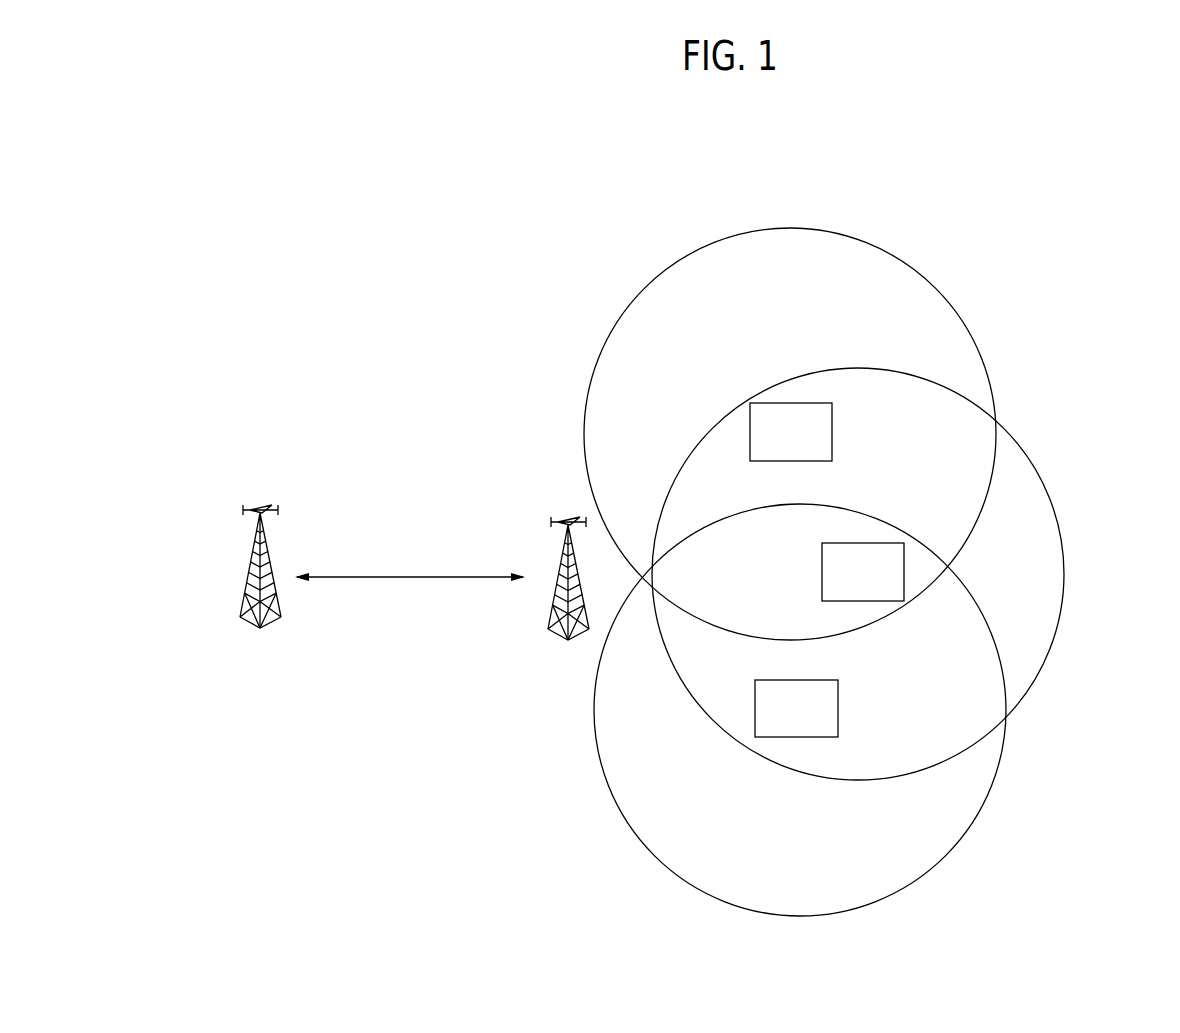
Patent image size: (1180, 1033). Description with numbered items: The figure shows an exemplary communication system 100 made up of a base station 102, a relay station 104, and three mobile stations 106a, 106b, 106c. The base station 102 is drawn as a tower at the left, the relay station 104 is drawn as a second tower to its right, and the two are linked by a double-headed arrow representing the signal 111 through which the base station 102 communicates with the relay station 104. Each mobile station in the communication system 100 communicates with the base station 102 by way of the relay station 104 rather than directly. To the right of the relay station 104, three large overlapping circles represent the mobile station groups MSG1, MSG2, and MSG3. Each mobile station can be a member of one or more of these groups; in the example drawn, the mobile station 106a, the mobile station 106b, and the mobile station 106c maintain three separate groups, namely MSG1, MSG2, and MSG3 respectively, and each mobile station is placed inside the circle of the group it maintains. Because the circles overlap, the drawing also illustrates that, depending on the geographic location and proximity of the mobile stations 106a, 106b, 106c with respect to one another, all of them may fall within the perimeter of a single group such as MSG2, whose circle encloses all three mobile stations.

The communication system 100 is at (1053, 240).
The base station 102 is at (248, 577).
The relay station 104 is at (552, 607).
The mobile station 106a is at (833, 430).
The mobile station 106b is at (822, 570).
The mobile station 106c is at (839, 707).
The signal 111 is at (393, 577).
The mobile station group MSG1 is at (875, 246).
The mobile station group MSG2 is at (1060, 531).
The mobile station group MSG3 is at (992, 785).